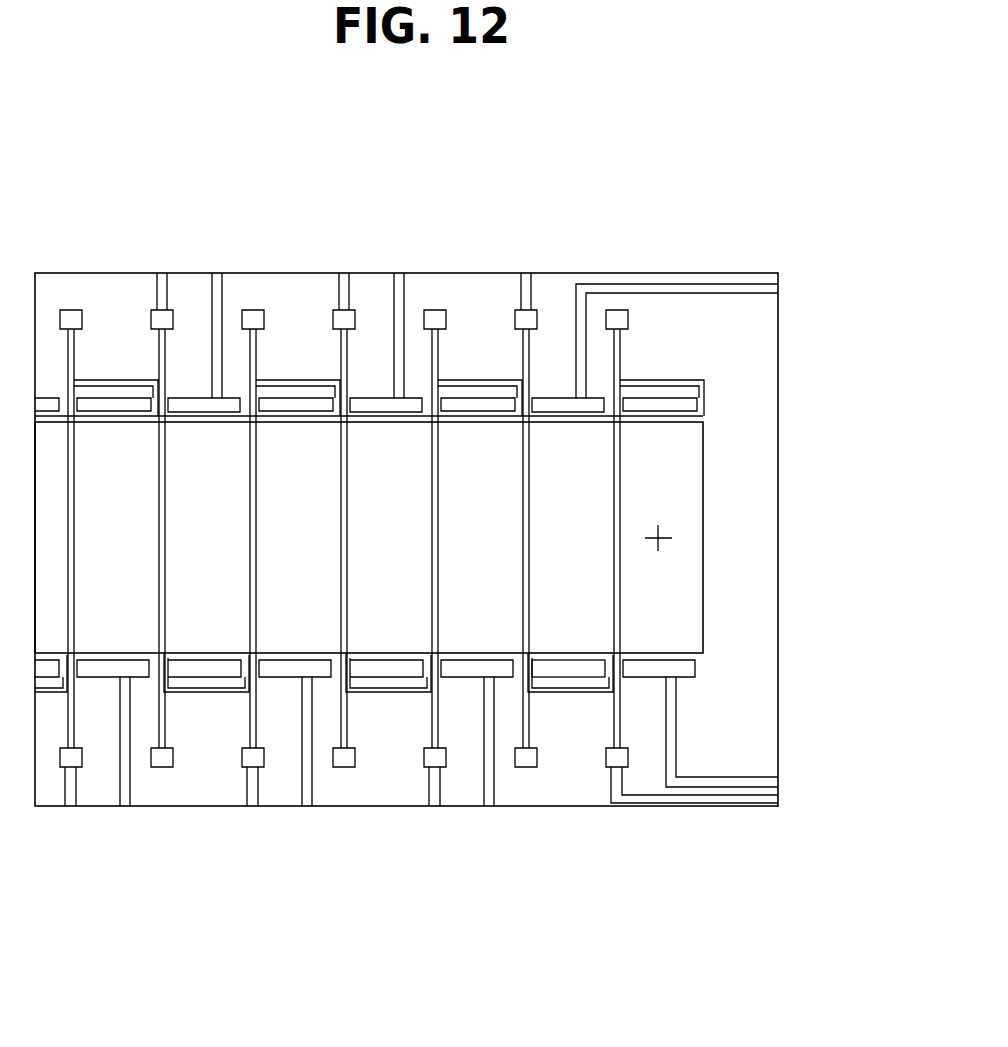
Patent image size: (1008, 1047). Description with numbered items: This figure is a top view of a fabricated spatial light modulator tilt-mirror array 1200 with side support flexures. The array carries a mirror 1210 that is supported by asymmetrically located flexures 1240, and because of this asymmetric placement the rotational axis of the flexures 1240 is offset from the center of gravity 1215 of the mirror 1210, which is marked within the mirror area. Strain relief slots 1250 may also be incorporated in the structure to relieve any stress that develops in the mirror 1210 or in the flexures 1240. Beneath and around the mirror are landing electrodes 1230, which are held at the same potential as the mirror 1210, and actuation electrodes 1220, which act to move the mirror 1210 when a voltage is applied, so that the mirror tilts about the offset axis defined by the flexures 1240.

The SLM mirror array 1200 is at (777, 262).
The mirror 1210 is at (673, 578).
The center of gravity 1215 is at (668, 528).
The actuation electrodes 1220 is at (575, 670).
The landing electrodes 1230 is at (405, 690).
The flexures 1240 is at (778, 286).
The strain relief slots 1250 is at (673, 413).